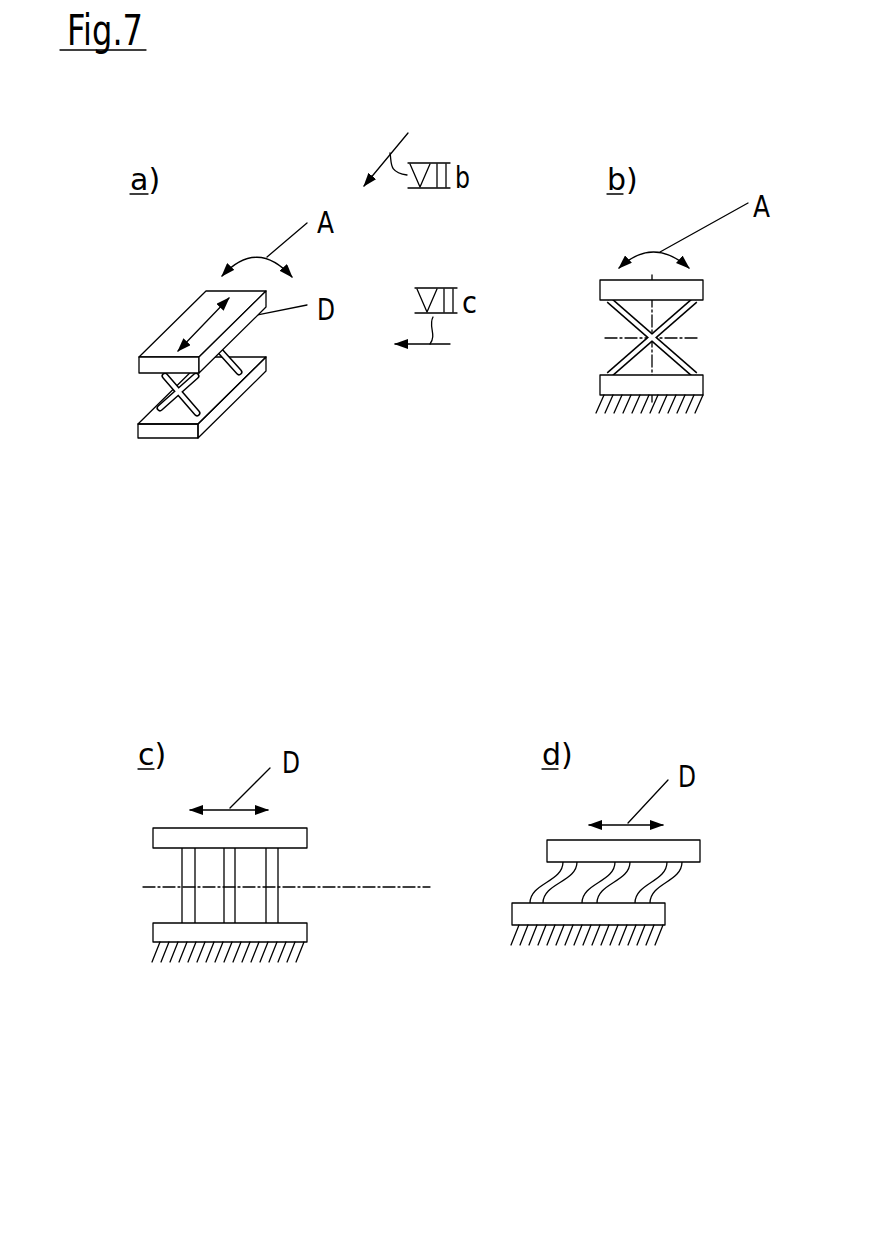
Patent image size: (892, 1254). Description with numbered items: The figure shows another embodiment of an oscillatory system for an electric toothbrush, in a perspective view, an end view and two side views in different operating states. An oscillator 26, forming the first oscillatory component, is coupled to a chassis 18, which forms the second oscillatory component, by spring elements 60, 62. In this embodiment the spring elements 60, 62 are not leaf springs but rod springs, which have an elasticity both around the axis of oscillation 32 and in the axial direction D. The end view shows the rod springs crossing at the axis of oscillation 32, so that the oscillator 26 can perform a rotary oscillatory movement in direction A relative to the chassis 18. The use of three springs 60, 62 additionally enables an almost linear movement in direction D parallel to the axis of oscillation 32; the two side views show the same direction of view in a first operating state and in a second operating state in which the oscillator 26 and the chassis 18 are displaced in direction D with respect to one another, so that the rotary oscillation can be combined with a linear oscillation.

In FIG. 7a, the chassis 18 is at (216, 416).
In FIG. 7b, the chassis 18 is at (690, 387).
In FIG. 7c, the chassis 18 is at (300, 935).
In FIG. 7d, the chassis 18 is at (642, 912).
In FIG. 7a, the oscillator 26 is at (203, 304).
In FIG. 7b, the oscillator 26 is at (692, 295).
In FIG. 7c, the oscillator 26 is at (288, 838).
In FIG. 7d, the oscillator 26 is at (672, 845).
In FIG. 7b, the axis of oscillation 32 is at (647, 339).
In FIG. 7c, the axis of oscillation 32 is at (310, 887).
In FIG. 7a, the spring element 60 is at (241, 359).
In FIG. 7b, the spring element 60 is at (687, 312).
In FIG. 7c, the spring element 60 is at (180, 870).
In FIG. 7d, the spring element 60 is at (532, 890).
In FIG. 7a, the spring element 62 is at (205, 399).
In FIG. 7b, the spring element 62 is at (642, 335).
In FIG. 7c, the spring element 62 is at (230, 948).
In FIG. 7d, the spring element 62 is at (599, 948).